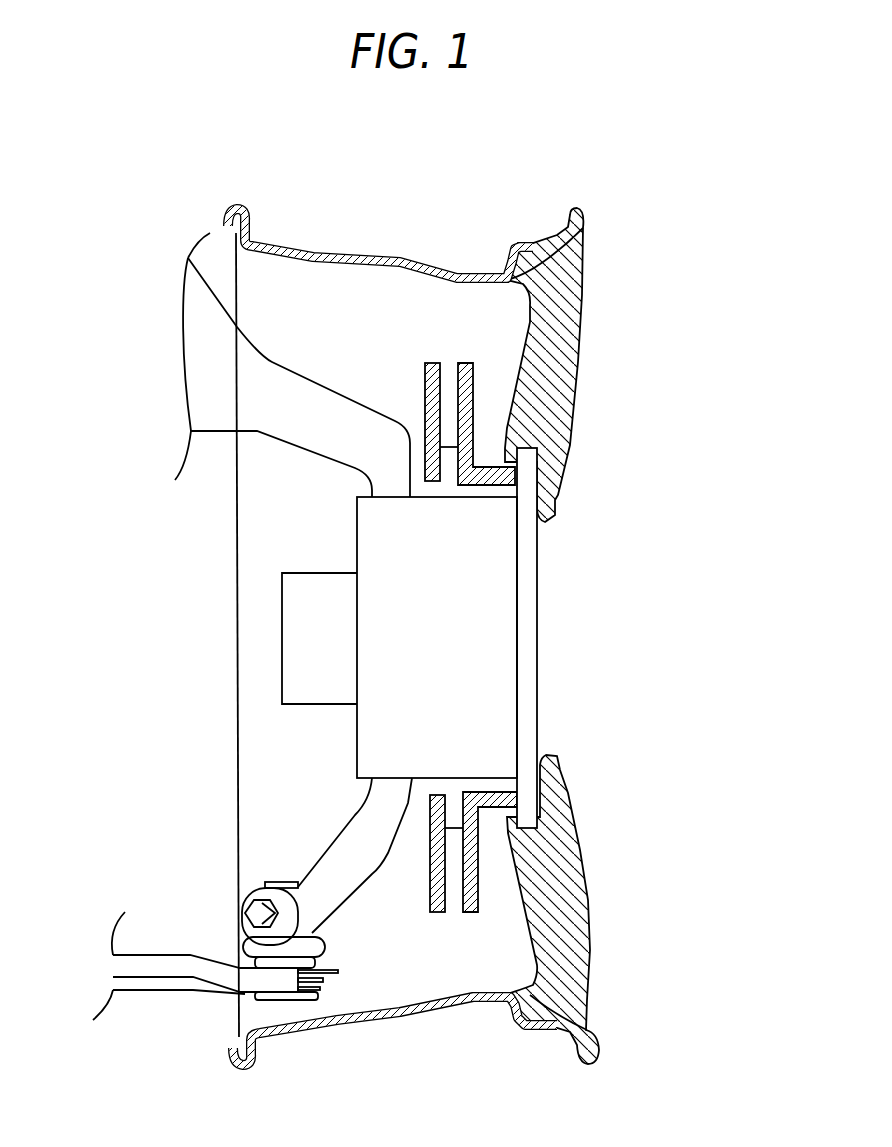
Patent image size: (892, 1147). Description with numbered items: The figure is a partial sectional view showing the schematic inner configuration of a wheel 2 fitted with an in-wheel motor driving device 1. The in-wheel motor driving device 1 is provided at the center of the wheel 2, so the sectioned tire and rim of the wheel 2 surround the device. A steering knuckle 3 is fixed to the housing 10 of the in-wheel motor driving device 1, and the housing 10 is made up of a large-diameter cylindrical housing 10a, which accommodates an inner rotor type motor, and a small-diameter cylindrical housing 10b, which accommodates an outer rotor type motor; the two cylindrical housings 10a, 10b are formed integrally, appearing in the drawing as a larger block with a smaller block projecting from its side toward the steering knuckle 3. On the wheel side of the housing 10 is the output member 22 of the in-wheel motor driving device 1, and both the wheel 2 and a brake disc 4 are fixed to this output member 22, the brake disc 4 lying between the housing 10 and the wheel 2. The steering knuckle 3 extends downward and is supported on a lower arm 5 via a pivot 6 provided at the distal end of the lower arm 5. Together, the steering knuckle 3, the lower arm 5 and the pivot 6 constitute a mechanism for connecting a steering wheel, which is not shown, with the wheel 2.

The in-wheel motor driving device 1 is at (280, 621).
The wheel 2 is at (584, 304).
The steering knuckle 3 is at (272, 437).
The brake disc 4 is at (463, 363).
The lower arm 5 is at (162, 962).
The pivot 6 is at (270, 890).
The housing 10 is at (517, 637).
The large-diameter cylindrical housing 10a is at (482, 575).
The small-diameter cylindrical housing 10b is at (330, 655).
The output member 22 is at (532, 675).